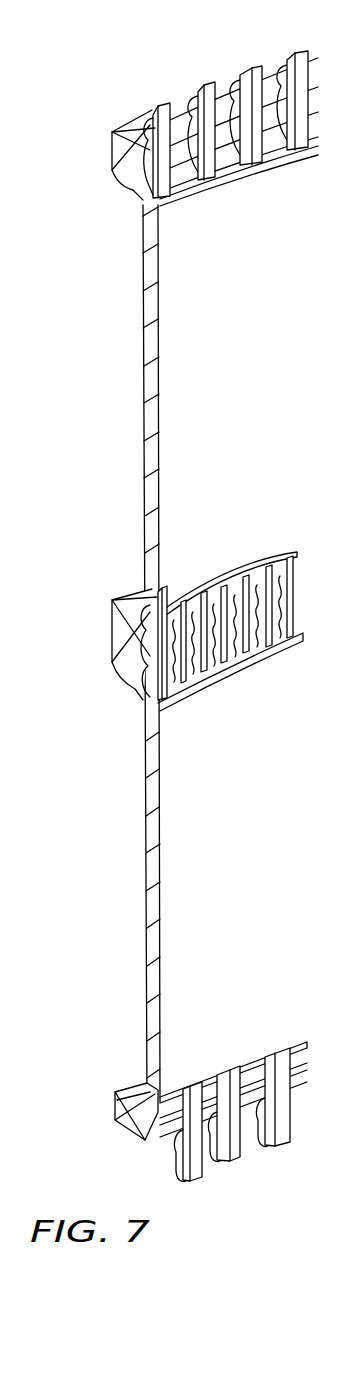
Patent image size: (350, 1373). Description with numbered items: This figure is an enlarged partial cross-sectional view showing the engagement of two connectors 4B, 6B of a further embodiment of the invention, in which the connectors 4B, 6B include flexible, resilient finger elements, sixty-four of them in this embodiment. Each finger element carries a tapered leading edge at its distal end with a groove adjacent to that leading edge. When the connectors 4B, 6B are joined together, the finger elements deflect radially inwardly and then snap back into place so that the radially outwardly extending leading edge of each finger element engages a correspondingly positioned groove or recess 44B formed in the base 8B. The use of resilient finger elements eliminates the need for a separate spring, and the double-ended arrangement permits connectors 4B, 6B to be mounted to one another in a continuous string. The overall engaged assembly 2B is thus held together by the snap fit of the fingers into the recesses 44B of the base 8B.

The connector assembly 2B is at (62, 46).
The connector 4B is at (105, 350).
The connector 6B is at (102, 862).
The base 8B is at (143, 440).
The groove or recess 44B is at (118, 1126).